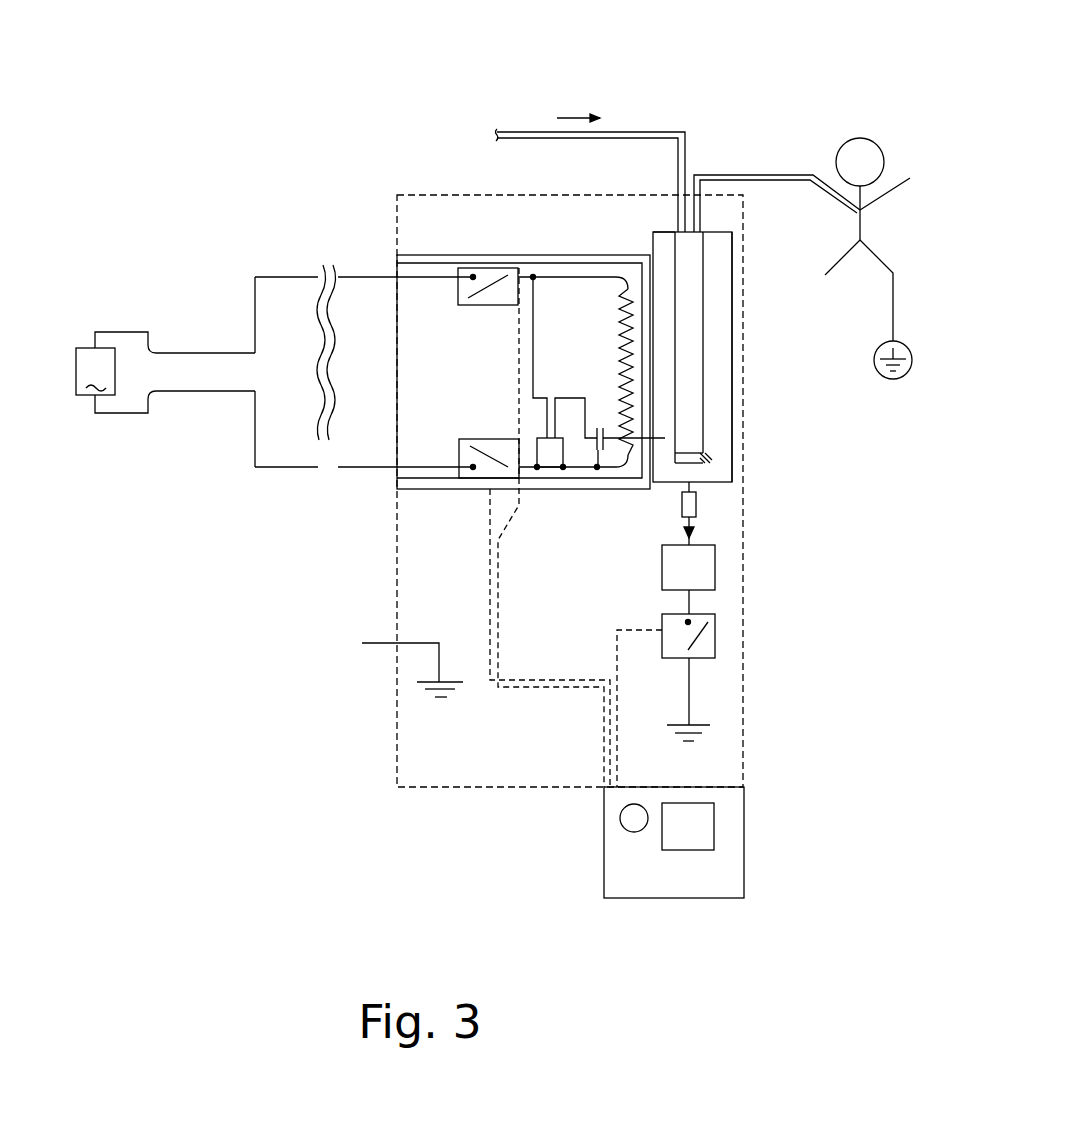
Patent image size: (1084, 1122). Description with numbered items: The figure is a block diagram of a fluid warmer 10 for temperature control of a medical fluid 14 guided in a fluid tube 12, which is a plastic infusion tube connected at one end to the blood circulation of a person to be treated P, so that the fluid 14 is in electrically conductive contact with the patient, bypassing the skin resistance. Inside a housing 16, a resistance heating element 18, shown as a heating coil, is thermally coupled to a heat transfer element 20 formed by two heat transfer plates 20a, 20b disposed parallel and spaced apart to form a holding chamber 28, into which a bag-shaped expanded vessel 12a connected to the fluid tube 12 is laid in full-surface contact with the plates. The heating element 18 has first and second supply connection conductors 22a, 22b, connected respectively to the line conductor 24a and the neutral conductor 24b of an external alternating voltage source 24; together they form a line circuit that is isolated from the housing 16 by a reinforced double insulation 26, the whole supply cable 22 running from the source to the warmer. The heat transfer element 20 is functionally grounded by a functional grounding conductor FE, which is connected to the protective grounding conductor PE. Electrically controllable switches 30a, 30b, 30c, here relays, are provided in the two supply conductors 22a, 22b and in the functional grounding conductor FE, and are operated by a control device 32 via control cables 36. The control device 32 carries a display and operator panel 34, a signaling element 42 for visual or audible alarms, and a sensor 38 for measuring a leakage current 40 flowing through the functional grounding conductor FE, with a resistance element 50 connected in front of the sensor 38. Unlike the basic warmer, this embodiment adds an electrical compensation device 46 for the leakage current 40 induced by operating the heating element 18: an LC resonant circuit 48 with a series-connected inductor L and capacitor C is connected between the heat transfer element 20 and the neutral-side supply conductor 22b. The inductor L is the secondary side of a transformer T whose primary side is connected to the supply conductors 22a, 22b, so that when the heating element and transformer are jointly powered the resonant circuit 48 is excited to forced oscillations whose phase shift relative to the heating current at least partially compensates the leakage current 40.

The fluid warmer 10 is at (332, 52).
The fluid tube 12 is at (735, 174).
The bag-shaped expanded vessel 12a is at (692, 398).
The medical fluid 14 is at (630, 131).
The housing 16 is at (447, 790).
The resistance heating element 18 is at (622, 338).
The heat transfer element 20 is at (750, 368).
The heat transfer plate 20a is at (655, 248).
The heat transfer plate 20b is at (727, 308).
The cable 22 is at (326, 366).
The first supply connection conductor 22a is at (412, 281).
The second supply connection conductor 22b is at (412, 465).
The alternating voltage source 24 is at (80, 346).
The line conductor 24a is at (195, 351).
The neutral conductor 24b is at (195, 394).
The reinforced insulation 26 is at (575, 479).
The holding chamber 28 is at (712, 454).
The electrically controllable switch 30a is at (480, 320).
The electrically controllable switch 30b is at (478, 427).
The electrically controllable switch 30c is at (735, 641).
The control device 32 is at (770, 823).
The display and operator panel 34 is at (703, 834).
The control cables 36 is at (570, 688).
The sensor 38 is at (705, 570).
The leakage current 40 is at (695, 540).
The signaling element 42 is at (622, 822).
The electrical compensation device 46 is at (593, 490).
The LC resonant circuit 48 is at (572, 345).
The resistance element 50 is at (690, 507).
The inductor L is at (553, 383).
The capacitor C is at (594, 416).
The transformer T is at (531, 420).
The person to be treated P is at (876, 189).
The protective grounding conductor PE is at (375, 648).
The functional grounding conductor FE is at (467, 710).